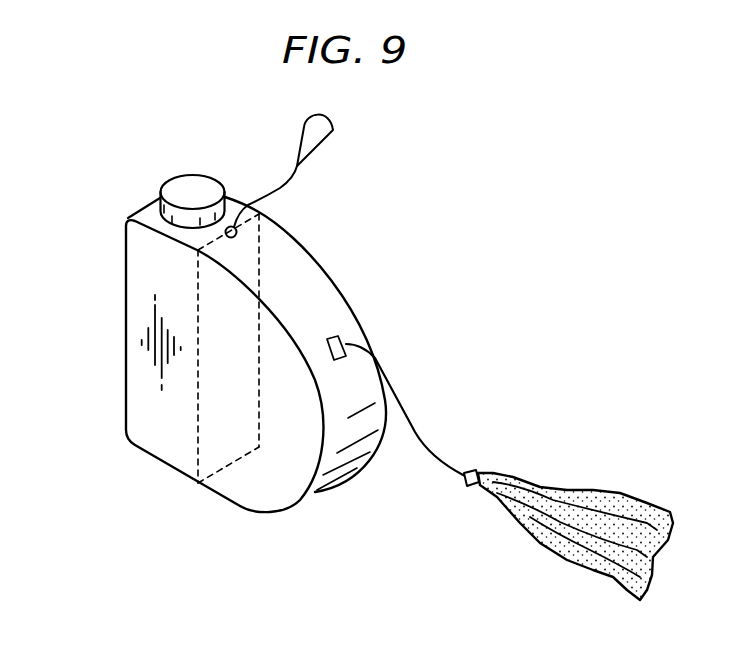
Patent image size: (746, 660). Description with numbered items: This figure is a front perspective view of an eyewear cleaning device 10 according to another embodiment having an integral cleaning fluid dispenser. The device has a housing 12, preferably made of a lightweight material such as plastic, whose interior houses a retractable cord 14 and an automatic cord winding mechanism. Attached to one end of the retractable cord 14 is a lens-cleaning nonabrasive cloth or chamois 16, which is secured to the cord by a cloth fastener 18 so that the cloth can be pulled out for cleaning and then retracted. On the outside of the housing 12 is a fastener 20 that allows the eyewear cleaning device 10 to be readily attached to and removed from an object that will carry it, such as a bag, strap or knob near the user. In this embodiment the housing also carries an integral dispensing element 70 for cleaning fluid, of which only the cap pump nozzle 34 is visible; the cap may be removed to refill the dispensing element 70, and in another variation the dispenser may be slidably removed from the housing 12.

The eyewear cleaning device 10 is at (407, 212).
The housing 12 is at (240, 496).
The retractable cord 14 is at (417, 430).
The lens-cleaning nonabrasive cloth or chamois 16 is at (622, 490).
The cloth fastener 18 is at (477, 472).
The fastener 20 is at (334, 136).
The cap pump nozzle 34 is at (191, 184).
The integral dispensing element 70 is at (122, 145).